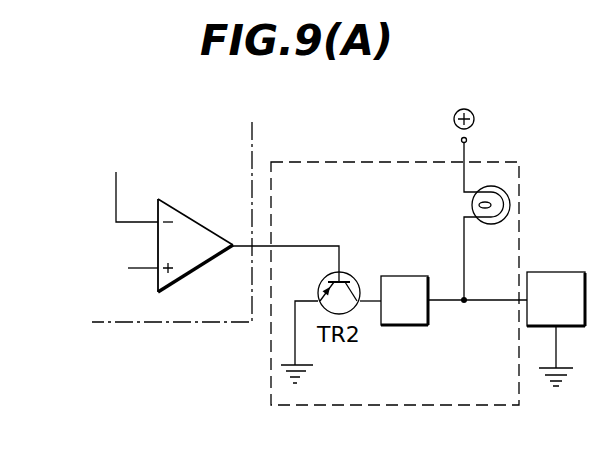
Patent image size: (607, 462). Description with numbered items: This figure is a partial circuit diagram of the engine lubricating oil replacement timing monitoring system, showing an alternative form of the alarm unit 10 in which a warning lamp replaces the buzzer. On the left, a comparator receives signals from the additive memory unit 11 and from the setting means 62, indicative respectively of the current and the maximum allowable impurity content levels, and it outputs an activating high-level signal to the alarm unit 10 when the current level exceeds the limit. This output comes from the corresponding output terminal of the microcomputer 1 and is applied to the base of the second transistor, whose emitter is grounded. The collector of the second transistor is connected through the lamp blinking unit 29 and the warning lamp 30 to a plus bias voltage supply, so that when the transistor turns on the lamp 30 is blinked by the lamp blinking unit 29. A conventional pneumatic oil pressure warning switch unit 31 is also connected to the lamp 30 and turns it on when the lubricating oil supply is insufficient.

The microcomputer 1 is at (195, 324).
The alarm unit 10 is at (470, 405).
The additive memory unit 11 is at (102, 269).
The lamp blinking unit 29 is at (402, 276).
The warning lamp 30 is at (507, 192).
The pneumatic oil pressure warning switch unit 31 is at (555, 272).
The setting means 62 is at (102, 180).